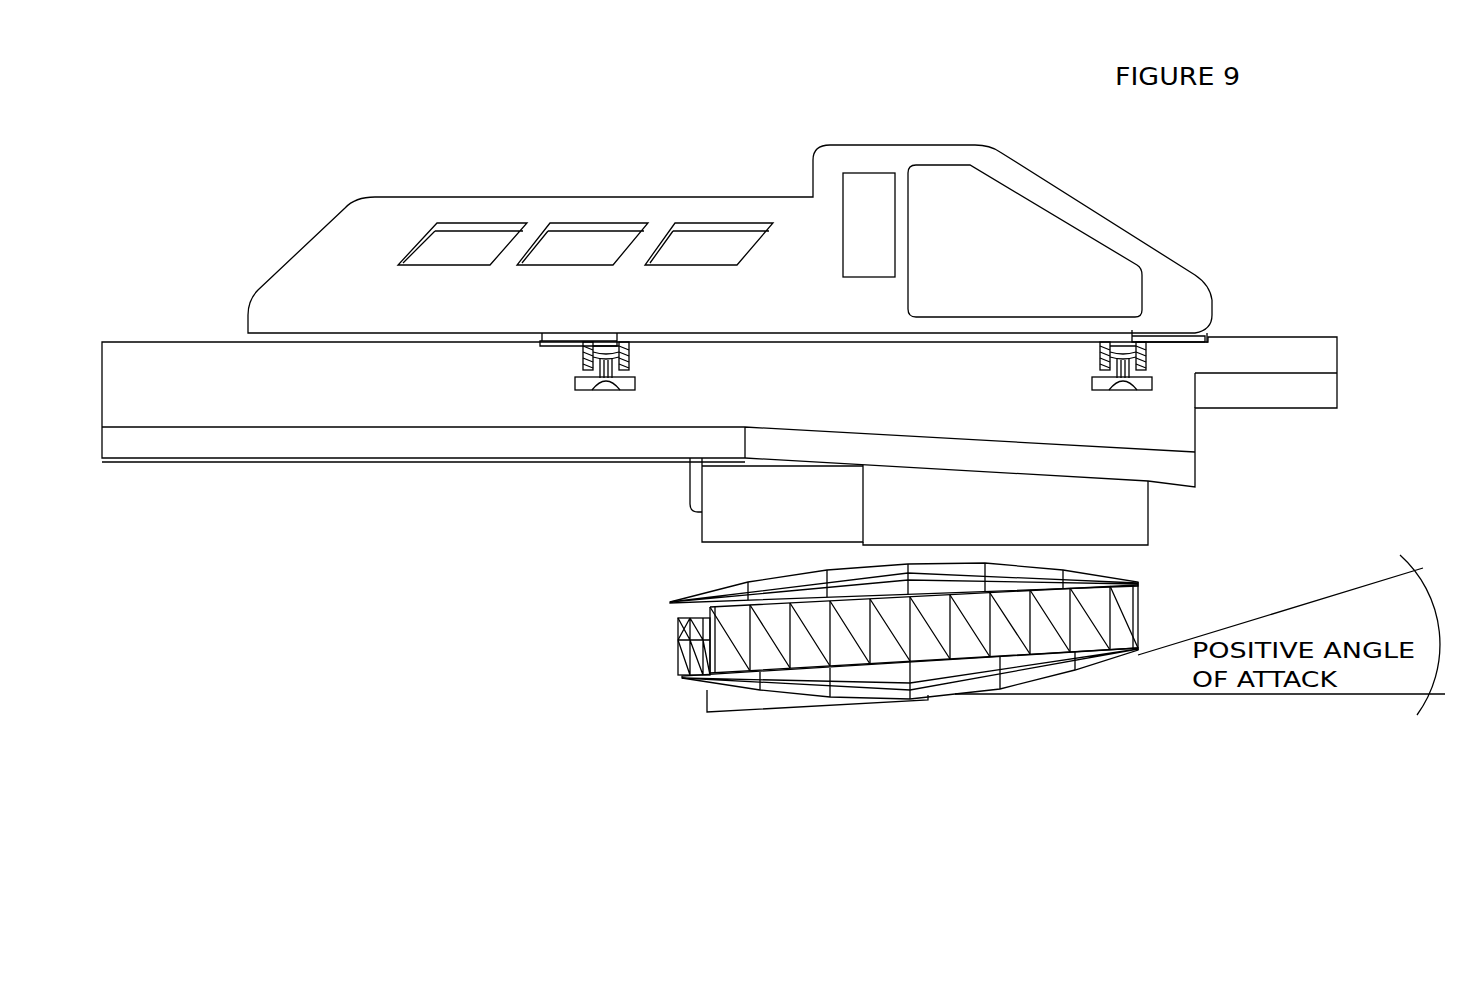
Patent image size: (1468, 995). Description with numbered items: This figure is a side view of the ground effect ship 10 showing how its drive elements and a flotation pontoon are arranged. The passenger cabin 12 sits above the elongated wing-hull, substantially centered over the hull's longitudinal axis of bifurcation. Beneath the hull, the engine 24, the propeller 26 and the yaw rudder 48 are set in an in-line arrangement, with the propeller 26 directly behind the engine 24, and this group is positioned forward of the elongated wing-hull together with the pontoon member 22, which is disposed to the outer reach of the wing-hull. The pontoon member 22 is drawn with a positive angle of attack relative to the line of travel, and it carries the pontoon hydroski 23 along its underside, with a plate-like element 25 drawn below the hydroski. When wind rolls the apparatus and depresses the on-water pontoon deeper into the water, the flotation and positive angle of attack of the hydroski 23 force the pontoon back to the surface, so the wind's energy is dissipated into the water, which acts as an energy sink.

The ground effect ship 10 is at (719, 300).
The passenger cabin 12 is at (540, 193).
The pontoon member 22 is at (1100, 580).
The pontoon hydroski 23 is at (868, 700).
The engine 24 is at (887, 488).
The mounting plate 25 is at (705, 713).
The propeller 26 is at (830, 526).
The yaw rudder 48 is at (685, 507).